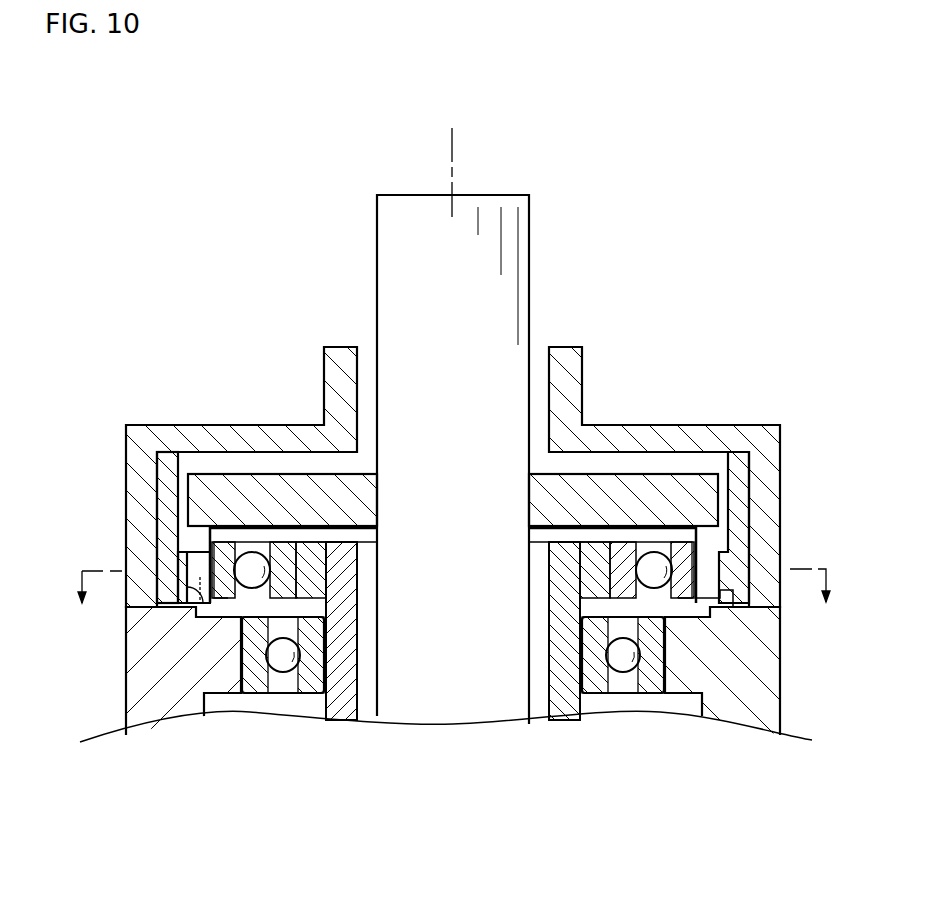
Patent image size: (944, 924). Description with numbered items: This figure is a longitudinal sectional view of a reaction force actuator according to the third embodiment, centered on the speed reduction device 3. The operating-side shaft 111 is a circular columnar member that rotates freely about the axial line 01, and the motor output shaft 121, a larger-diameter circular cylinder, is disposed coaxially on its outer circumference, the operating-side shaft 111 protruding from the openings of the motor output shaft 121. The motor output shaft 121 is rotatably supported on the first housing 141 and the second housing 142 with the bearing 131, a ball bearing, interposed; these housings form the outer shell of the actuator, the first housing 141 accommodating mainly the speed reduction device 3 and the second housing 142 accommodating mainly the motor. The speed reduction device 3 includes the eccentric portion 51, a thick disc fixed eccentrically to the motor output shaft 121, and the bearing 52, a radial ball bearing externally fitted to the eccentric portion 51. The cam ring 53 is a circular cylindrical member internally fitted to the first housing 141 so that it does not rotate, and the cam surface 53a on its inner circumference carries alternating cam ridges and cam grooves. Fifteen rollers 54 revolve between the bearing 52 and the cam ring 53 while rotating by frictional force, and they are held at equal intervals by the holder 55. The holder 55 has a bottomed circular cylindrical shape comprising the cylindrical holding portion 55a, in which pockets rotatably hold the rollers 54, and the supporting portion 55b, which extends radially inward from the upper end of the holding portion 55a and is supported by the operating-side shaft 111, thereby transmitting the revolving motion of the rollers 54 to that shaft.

The speed reduction device 3 is at (208, 241).
The axial line 01 is at (452, 158).
The operating-side shaft 111 is at (415, 298).
The first housing 141 is at (124, 488).
The second housing 142 is at (125, 717).
The holder 55 is at (445, 458).
The holding portion 55a is at (750, 503).
The supporting portion 55b is at (262, 497).
The eccentric portion 51 is at (598, 555).
The bearing 52 is at (677, 545).
The cam ring 53 is at (757, 549).
The cam surface 53a is at (193, 604).
The rollers 54 is at (188, 573).
The motor output shaft 121 is at (573, 707).
The bearing 131 is at (645, 690).